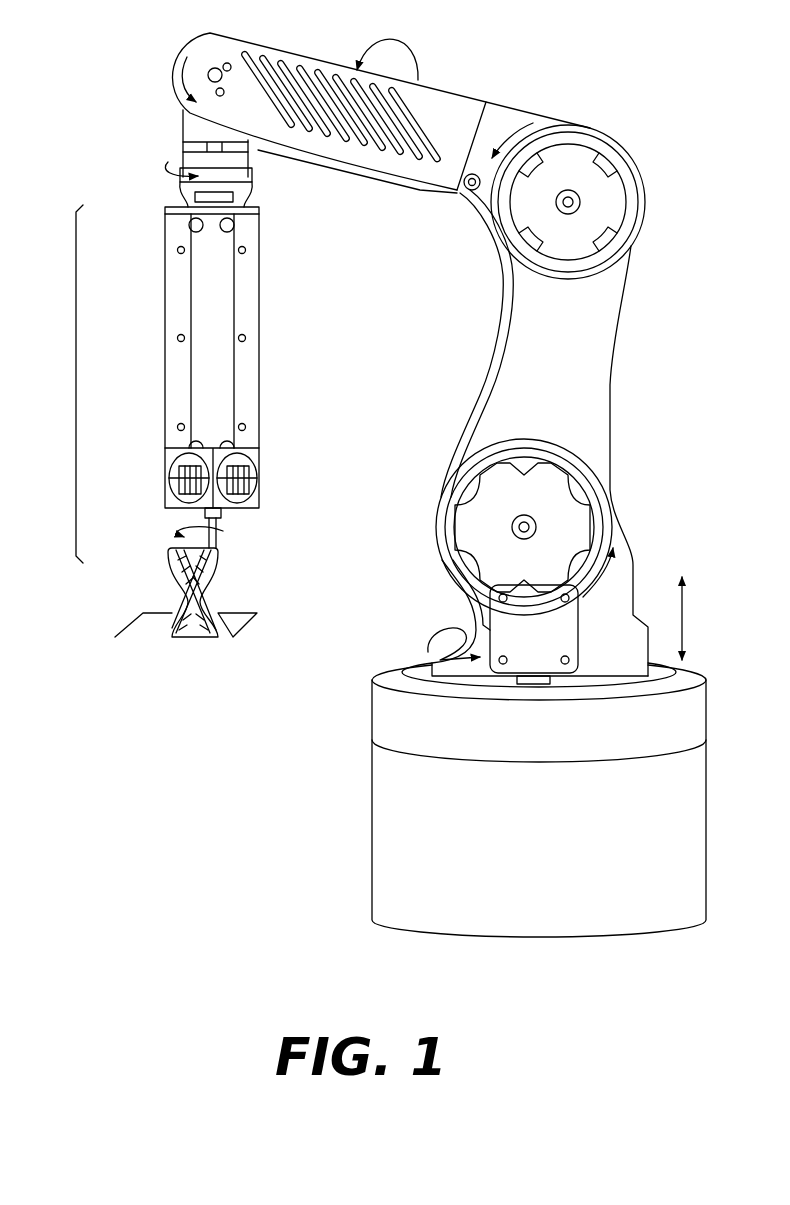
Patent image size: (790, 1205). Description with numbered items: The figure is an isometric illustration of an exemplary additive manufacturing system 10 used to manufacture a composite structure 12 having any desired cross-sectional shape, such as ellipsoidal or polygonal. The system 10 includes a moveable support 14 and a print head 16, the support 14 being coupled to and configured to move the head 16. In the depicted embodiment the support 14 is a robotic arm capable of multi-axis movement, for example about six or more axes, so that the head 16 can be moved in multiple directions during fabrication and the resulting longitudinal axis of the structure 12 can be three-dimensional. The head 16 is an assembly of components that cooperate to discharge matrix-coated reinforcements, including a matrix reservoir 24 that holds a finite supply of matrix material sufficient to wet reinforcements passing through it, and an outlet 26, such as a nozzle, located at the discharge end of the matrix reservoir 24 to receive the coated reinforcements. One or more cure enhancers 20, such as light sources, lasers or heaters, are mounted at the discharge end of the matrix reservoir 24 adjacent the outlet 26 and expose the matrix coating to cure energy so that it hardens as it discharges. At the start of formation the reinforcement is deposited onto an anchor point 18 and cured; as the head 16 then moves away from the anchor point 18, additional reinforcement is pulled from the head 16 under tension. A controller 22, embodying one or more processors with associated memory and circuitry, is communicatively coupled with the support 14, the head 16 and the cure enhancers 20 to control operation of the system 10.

The system 10 is at (233, 676).
The composite structure 12 is at (216, 617).
The moveable support 14 is at (565, 401).
The print head 16 is at (76, 388).
The anchor point 18 is at (142, 637).
The cure enhancer 20 is at (167, 506).
The controller 22 is at (547, 644).
The matrix reservoir 24 is at (246, 390).
The outlet 26 is at (222, 552).